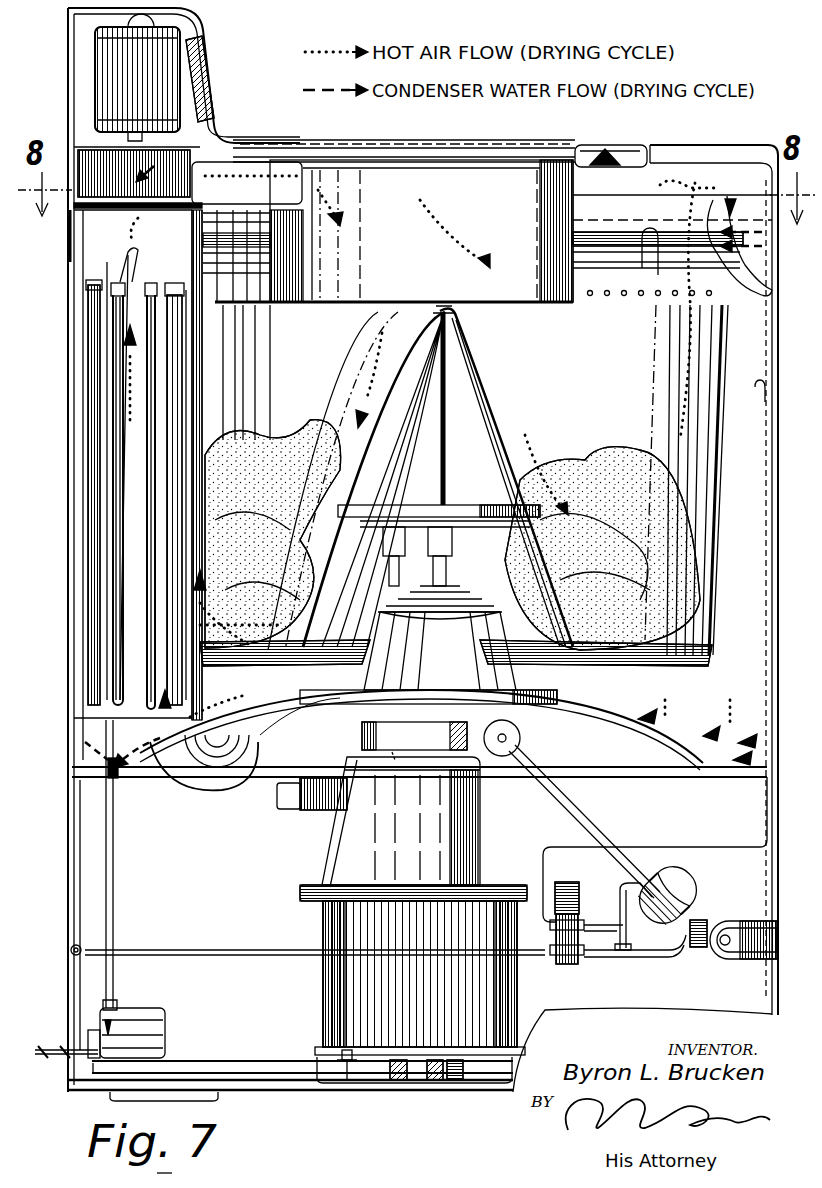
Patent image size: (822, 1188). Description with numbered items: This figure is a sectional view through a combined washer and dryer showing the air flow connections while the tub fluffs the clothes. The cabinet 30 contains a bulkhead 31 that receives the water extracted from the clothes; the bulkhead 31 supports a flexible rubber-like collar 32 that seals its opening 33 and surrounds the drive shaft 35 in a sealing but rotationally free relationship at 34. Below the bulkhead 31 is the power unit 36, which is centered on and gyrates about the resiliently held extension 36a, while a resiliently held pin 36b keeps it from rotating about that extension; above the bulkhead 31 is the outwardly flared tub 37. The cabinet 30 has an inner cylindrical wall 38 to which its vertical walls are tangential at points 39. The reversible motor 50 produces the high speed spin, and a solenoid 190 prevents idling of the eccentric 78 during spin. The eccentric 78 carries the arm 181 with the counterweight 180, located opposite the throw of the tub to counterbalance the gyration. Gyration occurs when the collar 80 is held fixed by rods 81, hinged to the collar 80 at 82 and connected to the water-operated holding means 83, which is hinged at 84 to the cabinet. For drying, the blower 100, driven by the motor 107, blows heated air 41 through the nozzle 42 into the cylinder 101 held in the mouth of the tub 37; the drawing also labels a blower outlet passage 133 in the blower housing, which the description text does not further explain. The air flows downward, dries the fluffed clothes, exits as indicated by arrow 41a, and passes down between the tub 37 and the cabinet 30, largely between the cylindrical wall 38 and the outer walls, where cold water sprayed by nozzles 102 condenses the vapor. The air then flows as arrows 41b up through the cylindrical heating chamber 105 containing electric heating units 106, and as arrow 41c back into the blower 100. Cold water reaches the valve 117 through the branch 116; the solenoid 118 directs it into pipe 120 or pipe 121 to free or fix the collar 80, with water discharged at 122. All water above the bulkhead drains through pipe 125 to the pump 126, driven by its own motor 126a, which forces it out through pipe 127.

The cabinet 30 is at (770, 596).
The bulkhead 31 is at (630, 765).
The flexible rubber-like collar 32 is at (498, 688).
The opening 33 is at (530, 705).
The sealing relationship 34 is at (455, 588).
The drive shaft 35 is at (446, 565).
The power unit 36 is at (470, 832).
The resiliently held extension 36a is at (410, 1080).
The resiliently held pin 36b is at (350, 1080).
The tub 37 is at (715, 537).
The inner cylindrical wall 38 is at (700, 685).
The tangential points 39 is at (782, 348).
The drying air 41 is at (255, 180).
The drying air leaving tub 41a is at (700, 184).
The drying air entering heating chamber 41b is at (122, 750).
The reheated air flowing to blower 41c is at (150, 233).
The nozzle 42 is at (297, 165).
The reversible motor 50 is at (345, 988).
The eccentric 78 is at (389, 750).
The collar 80 is at (362, 733).
The rods 81 is at (580, 820).
The hinge 82 is at (508, 738).
The holding means 83 is at (678, 892).
The hinge 84 is at (748, 905).
The blower 100 is at (178, 160).
The cylinder 101 is at (565, 183).
The nozzles 102 is at (740, 248).
The cylindrical heating chamber 105 is at (100, 622).
The electric heating units 106 is at (92, 477).
The motor 107 is at (95, 85).
The branch 116 is at (178, 950).
The valve 117 is at (570, 965).
The solenoid 118 is at (577, 903).
The pipe 120 is at (603, 925).
The pipe 121 is at (620, 960).
The discharge pipe 122 is at (688, 847).
The pipe 125 is at (113, 880).
The pump 126 is at (104, 1035).
The motor 126a is at (165, 1025).
The pipe 127 is at (40, 1050).
The blower outlet duct 133 is at (213, 86).
The counterweight 180 is at (178, 790).
The arm 181 is at (284, 720).
The solenoid 190 is at (296, 808).